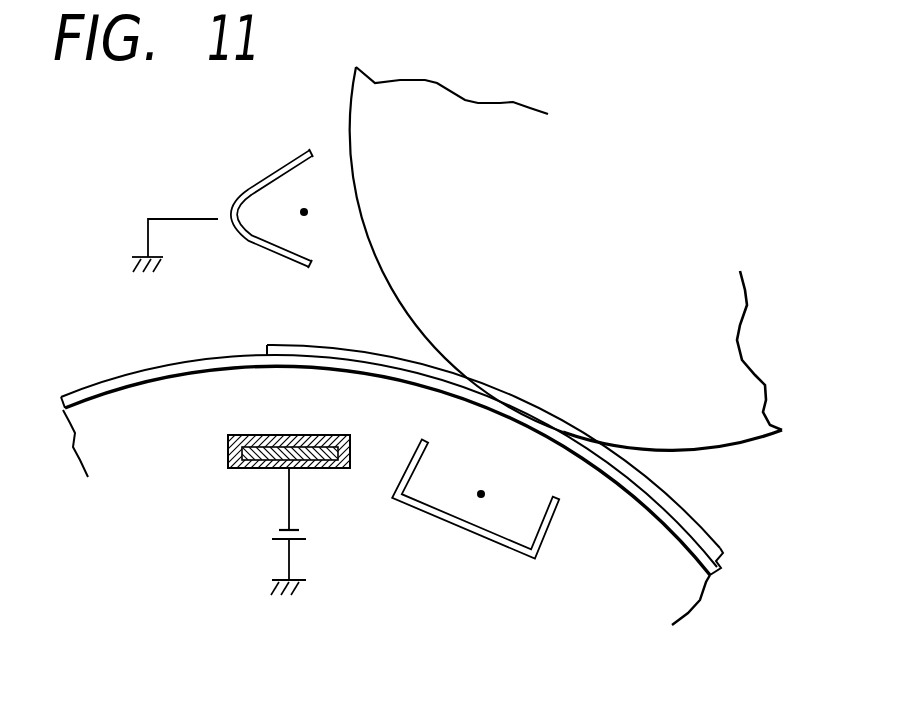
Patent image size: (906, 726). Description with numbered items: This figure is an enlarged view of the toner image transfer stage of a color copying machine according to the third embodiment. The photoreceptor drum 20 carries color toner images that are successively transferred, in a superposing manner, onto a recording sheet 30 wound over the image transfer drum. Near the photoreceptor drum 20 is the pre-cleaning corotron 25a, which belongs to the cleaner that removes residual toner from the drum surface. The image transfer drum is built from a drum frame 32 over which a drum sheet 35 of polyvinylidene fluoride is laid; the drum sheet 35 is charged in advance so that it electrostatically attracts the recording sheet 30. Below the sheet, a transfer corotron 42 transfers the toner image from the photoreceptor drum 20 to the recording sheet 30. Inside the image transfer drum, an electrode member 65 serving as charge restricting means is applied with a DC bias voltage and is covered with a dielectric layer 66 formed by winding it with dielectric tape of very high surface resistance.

The photoreceptor drum 20 is at (742, 441).
The pre-cleaning corotron 25a is at (262, 160).
The recording sheet 30 is at (692, 512).
The drum frame 32 is at (392, 467).
The drum sheet 35 is at (108, 397).
The transfer corotron 42 is at (488, 539).
The electrode member 65 is at (295, 448).
The dielectric layer 66 is at (288, 490).